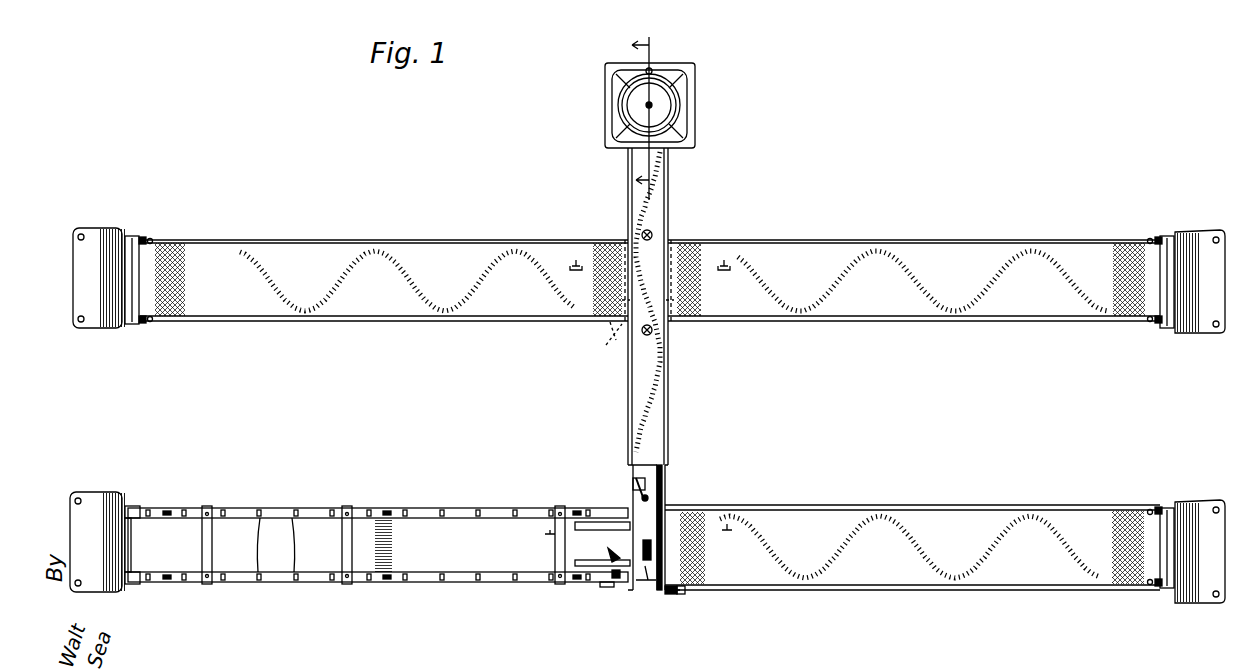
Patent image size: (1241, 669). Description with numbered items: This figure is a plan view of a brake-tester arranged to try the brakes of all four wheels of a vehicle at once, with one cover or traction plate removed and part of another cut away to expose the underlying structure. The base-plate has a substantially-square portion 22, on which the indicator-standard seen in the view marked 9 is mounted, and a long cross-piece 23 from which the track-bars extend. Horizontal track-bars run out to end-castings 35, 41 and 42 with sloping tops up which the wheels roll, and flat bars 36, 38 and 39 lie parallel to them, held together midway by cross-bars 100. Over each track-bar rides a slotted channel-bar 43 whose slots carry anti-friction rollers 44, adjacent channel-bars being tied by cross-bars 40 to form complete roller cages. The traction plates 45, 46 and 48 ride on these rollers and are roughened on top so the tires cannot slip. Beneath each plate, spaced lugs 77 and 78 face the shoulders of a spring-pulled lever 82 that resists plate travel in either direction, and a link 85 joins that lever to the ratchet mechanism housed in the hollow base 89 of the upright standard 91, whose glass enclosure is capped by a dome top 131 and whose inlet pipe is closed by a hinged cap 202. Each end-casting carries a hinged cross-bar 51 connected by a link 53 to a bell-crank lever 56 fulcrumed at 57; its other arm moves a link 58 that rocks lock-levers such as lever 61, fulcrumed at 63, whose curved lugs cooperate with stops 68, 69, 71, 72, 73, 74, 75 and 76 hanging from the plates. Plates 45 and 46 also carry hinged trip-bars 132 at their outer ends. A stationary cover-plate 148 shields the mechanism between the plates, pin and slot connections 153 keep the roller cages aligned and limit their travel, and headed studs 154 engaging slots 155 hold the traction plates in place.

The indicator-standard figure reference 9 is at (646, 117).
The substantially-square portion 22 is at (694, 82).
The long cross-piece 23 is at (657, 476).
The end-casting 35 is at (1198, 238).
The flat bar 36 is at (138, 506).
The flat bar 38 is at (136, 572).
The flat bar 39 is at (86, 270).
The cross-bar 40 is at (235, 540).
The end-casting 41 is at (84, 522).
The end-casting 42 is at (1180, 534).
The channel-bar 43 is at (460, 572).
The anti-friction roller 44 is at (292, 520).
The cover or wheel plate 45 is at (384, 280).
The cover or wheel plate 46 is at (914, 280).
The cover or wheel plate 48 is at (912, 547).
The cross-bar 51 is at (133, 540).
The link 53 is at (273, 508).
The bell-crank lever 56 is at (636, 490).
The fulcrum 57 is at (645, 488).
The link 58 is at (666, 473).
The lock-lever 61 is at (628, 588).
The fulcrum 63 is at (646, 584).
The stop 68 is at (614, 330).
The stop 69 is at (618, 336).
The stop 71 is at (666, 303).
The stop 72 is at (668, 298).
The stop 73 is at (614, 578).
The stop 74 is at (643, 553).
The stop 75 is at (682, 588).
The stop 76 is at (670, 588).
The lug or abutment 77 is at (560, 535).
The lug or abutment 78 is at (594, 294).
The lever 82 is at (604, 522).
The link 85 is at (633, 470).
The hollow base 89 is at (680, 97).
The upright casing or hollow standard 91 is at (676, 128).
The cross-bar 100 is at (575, 563).
The dome top 131 is at (672, 110).
The trip-bar 132 is at (135, 281).
The stationary cover-plate 148 is at (632, 409).
The pin and slot connection 153 is at (167, 510).
The headed stud 154 is at (143, 237).
The slot 155 is at (152, 240).
The hinged cap or cover 202 is at (651, 69).